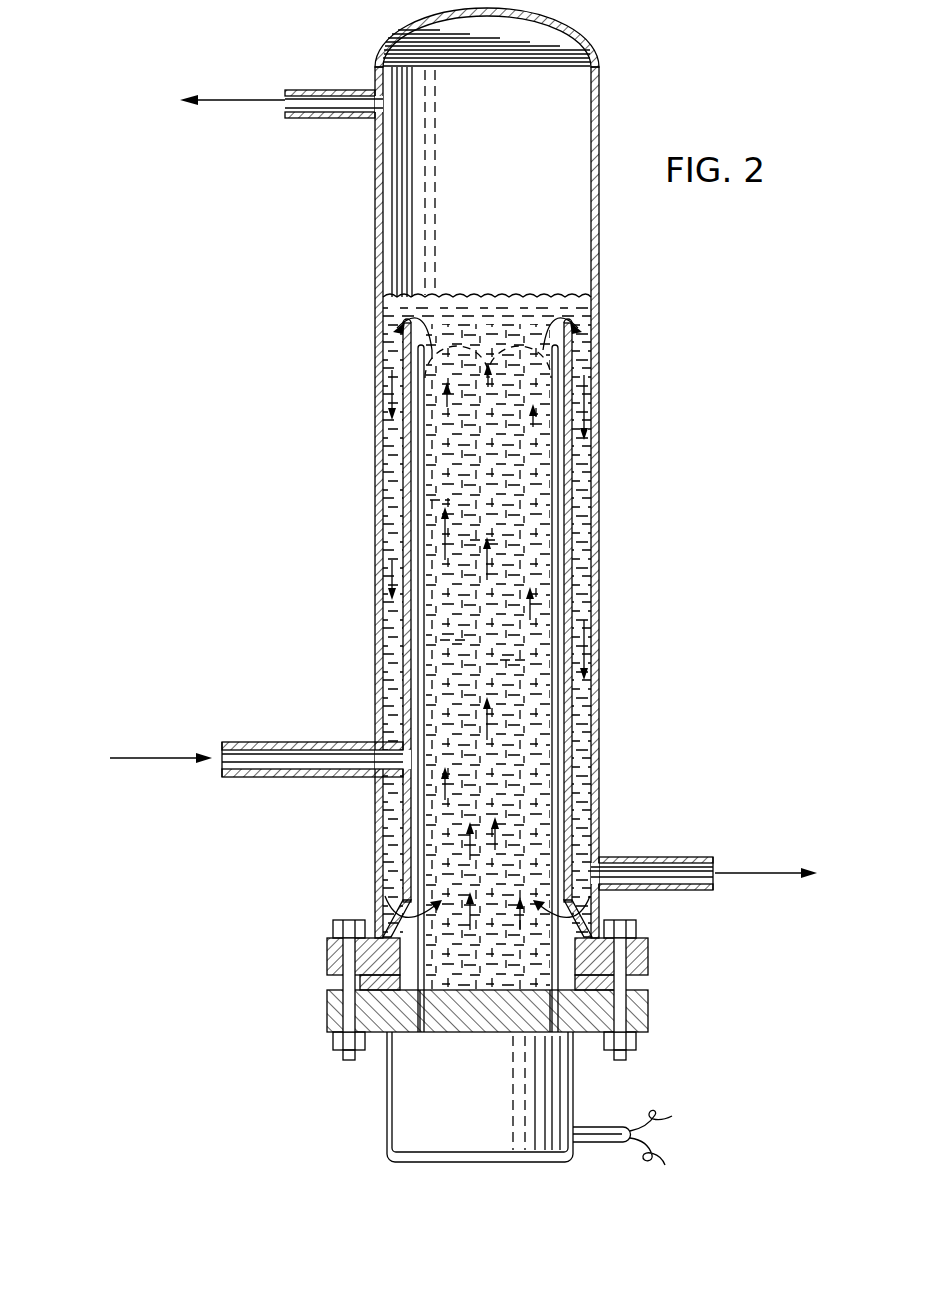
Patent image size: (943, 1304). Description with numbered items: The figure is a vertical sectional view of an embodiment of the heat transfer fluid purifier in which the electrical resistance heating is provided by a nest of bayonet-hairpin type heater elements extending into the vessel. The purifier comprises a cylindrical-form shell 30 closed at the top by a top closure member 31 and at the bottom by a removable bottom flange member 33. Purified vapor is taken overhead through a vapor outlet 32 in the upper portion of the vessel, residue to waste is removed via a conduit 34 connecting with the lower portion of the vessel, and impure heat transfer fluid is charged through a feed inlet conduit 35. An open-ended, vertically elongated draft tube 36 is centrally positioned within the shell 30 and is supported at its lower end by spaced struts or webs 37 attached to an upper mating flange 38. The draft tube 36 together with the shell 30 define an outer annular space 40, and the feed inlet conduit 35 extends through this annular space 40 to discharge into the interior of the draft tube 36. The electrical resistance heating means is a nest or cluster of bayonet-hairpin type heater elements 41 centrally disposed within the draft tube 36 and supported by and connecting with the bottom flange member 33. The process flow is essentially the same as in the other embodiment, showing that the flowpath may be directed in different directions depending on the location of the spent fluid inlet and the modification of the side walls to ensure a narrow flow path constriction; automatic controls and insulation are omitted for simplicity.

The shell 30 is at (378, 190).
The top closure member 31 is at (548, 45).
The vapor outlet pipe 32 is at (322, 120).
The bottom flange member 33 is at (325, 1008).
The residue outlet pipe 34 is at (612, 856).
The inlet pipe 35 is at (249, 779).
The draft tube 36 is at (570, 518).
The struts or webs 37 is at (388, 907).
The upper mating flange 38 is at (335, 955).
The annular space 40 is at (577, 482).
The bayonet-hairpin type heater elements 41 is at (453, 580).